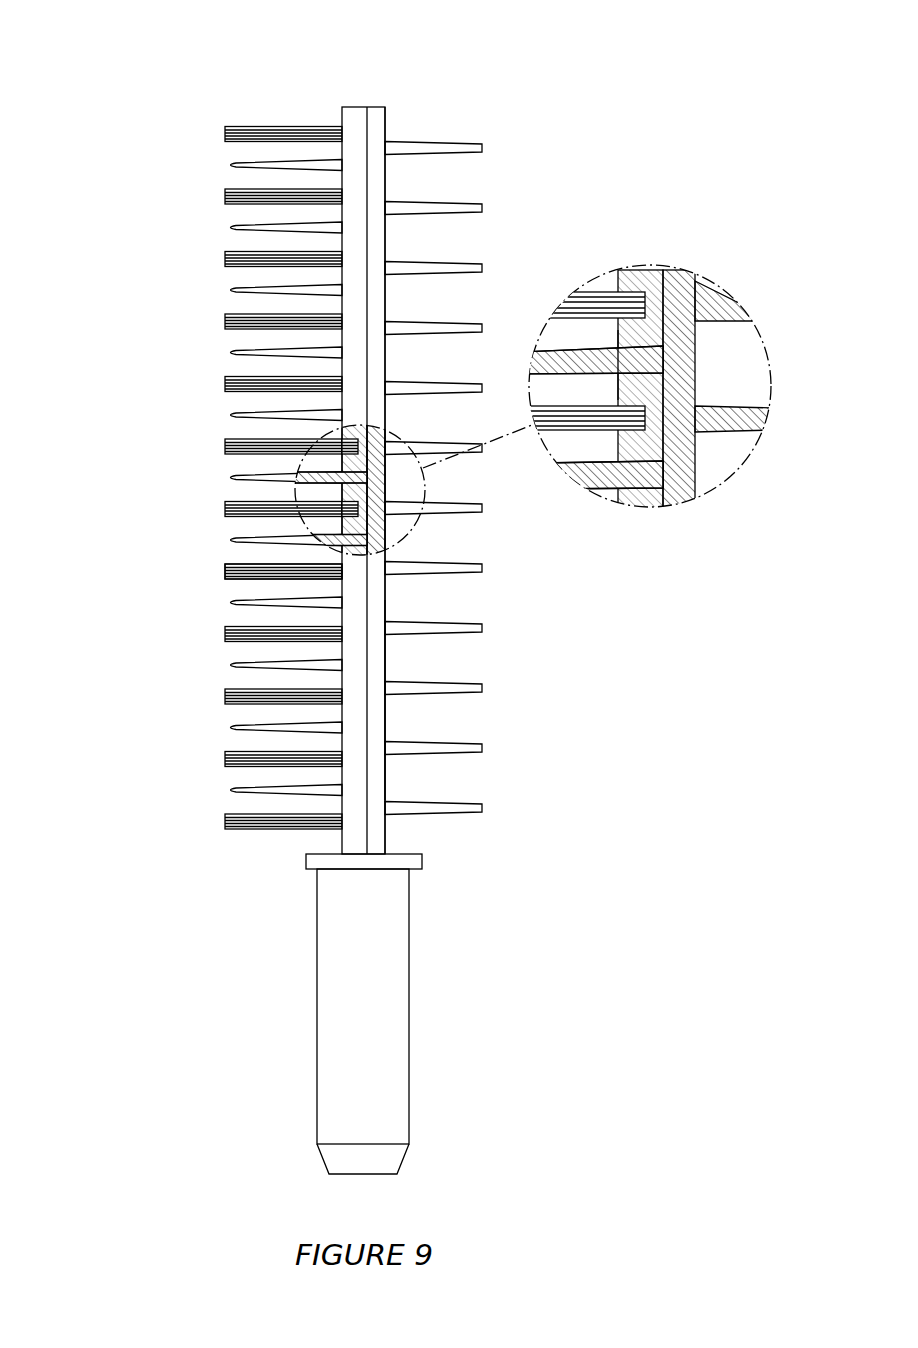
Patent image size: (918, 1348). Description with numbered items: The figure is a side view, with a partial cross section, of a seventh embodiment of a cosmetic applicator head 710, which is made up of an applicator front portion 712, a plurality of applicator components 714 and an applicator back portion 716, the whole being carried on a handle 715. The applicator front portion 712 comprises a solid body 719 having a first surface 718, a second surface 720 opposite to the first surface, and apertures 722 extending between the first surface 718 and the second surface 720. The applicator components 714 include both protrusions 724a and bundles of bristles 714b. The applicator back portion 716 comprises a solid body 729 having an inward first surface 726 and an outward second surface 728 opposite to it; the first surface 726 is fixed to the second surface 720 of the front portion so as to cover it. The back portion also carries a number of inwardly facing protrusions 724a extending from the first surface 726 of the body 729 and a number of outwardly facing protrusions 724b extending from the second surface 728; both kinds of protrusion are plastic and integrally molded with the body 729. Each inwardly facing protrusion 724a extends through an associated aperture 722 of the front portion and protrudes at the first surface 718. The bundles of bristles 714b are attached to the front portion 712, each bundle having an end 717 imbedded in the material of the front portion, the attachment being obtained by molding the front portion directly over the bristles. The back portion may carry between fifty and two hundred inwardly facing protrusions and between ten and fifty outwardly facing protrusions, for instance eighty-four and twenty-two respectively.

The cosmetic applicator head 710 is at (422, 591).
The applicator front portion 712 is at (358, 95).
The applicator components 714 is at (411, 478).
The bundles of bristles 714b is at (223, 388).
The handle 715 is at (409, 1018).
The applicator back portion 716 is at (399, 119).
The end of bundle of bristles 717 is at (652, 298).
The first surface of applicator front portion 718 is at (340, 107).
The solid body of applicator front portion 719 is at (643, 447).
The second surface of applicator front portion 720 is at (375, 185).
The apertures 722 is at (610, 387).
The inwardly facing protrusions 724a is at (225, 353).
The outwardly facing protrusions 724b is at (483, 208).
The first surface of applicator back portion 726 is at (300, 582).
The second surface of applicator back portion 728 is at (385, 710).
The solid body of applicator back portion 729 is at (690, 372).